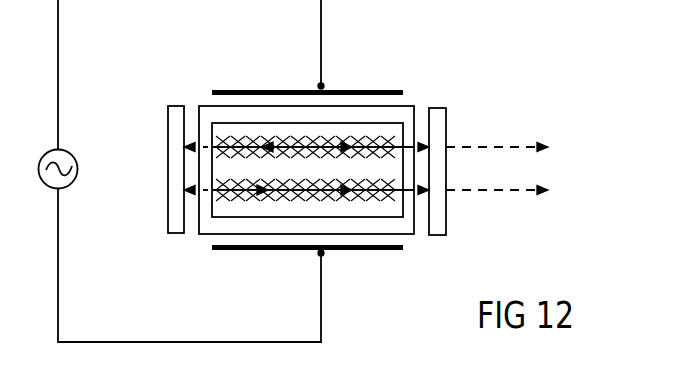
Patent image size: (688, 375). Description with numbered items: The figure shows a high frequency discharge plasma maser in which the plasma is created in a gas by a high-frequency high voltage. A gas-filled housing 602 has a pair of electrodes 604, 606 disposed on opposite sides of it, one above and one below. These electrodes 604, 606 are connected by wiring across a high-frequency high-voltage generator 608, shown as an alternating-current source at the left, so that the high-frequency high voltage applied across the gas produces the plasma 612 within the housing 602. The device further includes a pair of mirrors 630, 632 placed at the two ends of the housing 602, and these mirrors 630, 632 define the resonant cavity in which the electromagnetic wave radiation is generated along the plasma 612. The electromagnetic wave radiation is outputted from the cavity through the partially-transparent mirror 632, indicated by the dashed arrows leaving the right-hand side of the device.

The gas-filled housing 602 is at (415, 106).
The electrode 604 is at (391, 90).
The electrode 606 is at (383, 252).
The high-frequency high-voltage generator 608 is at (66, 157).
The plasma 612 is at (330, 140).
The mirror 630 is at (168, 201).
The partially-transparent mirror 632 is at (442, 128).